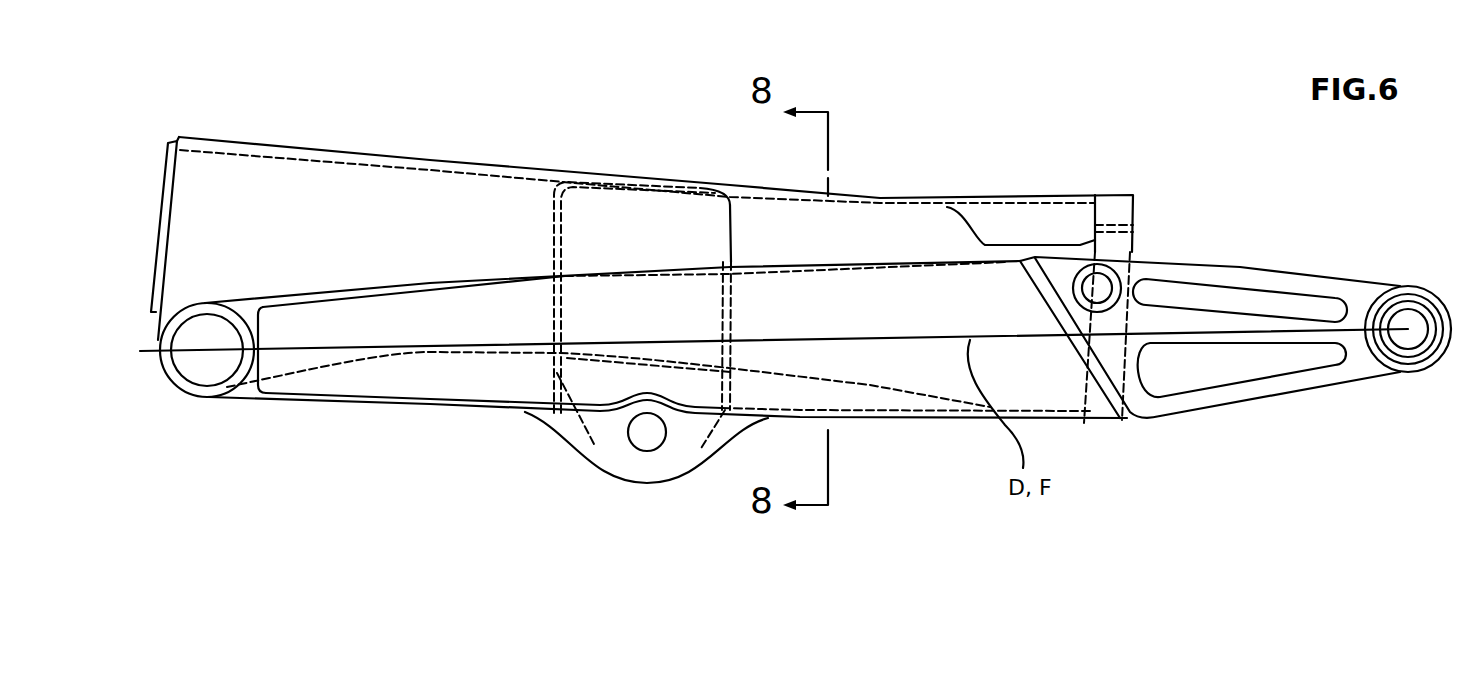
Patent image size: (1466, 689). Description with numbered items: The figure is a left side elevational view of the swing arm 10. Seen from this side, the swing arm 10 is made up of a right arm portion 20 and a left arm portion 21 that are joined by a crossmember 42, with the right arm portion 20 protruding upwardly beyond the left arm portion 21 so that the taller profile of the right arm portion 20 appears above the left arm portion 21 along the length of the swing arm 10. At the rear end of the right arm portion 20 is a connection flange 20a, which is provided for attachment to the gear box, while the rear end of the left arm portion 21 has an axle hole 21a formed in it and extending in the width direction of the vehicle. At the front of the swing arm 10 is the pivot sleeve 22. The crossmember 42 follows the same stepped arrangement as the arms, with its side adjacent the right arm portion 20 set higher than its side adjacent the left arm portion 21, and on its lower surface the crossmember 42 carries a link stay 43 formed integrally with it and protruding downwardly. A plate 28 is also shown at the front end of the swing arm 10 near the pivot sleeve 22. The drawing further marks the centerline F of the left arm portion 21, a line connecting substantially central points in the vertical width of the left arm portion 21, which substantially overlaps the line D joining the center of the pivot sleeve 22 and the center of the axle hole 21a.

The swing arm 10 is at (357, 122).
The right arm portion 20 is at (473, 183).
The connection flange 20a is at (1110, 205).
The left arm portion 21 is at (875, 367).
The axle hole 21a is at (1408, 340).
The pivot sleeve 22 is at (173, 370).
The plate 28 is at (157, 170).
The crossmember 42 is at (647, 208).
The link stay 43 is at (612, 460).